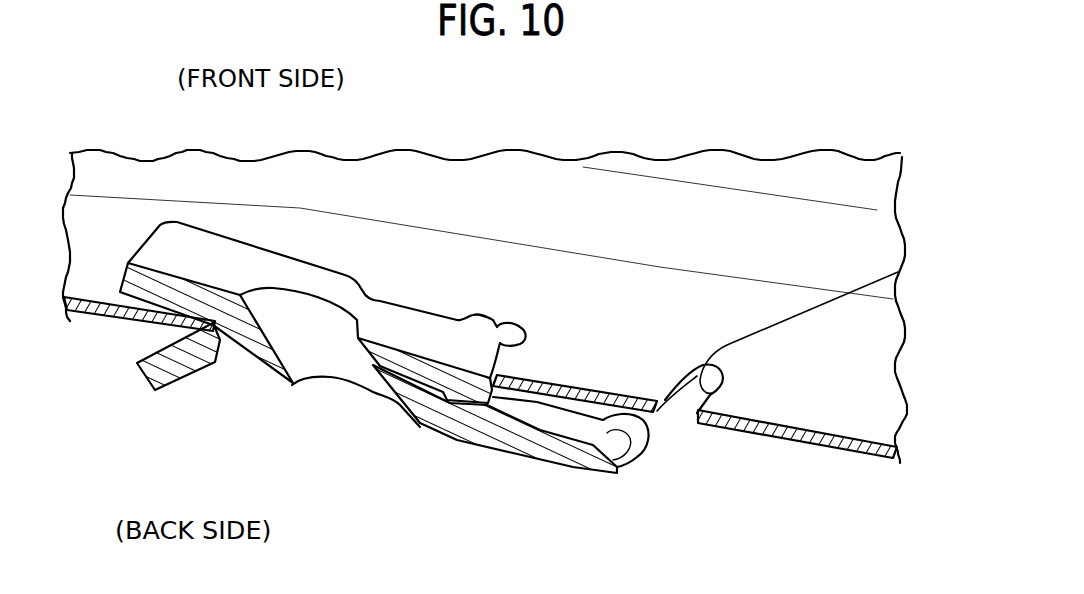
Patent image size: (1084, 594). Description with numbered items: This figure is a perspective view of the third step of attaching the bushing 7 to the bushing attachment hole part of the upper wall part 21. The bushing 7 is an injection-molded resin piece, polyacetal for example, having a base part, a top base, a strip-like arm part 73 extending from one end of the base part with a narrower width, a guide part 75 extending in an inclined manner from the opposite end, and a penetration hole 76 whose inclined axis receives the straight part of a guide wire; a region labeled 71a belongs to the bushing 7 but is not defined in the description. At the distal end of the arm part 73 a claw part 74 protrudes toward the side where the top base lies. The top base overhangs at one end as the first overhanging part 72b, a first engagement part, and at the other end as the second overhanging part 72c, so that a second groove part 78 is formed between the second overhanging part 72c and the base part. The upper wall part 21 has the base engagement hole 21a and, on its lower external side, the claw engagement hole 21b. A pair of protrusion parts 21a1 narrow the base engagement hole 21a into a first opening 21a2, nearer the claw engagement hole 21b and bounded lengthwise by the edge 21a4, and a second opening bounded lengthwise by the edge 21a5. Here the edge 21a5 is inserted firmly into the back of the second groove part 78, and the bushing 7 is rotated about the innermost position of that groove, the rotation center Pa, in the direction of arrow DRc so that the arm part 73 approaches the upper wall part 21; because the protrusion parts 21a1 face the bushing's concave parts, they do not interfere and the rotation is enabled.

The bushing 7 is at (463, 323).
The upper wall part 21 is at (853, 403).
The base engagement hole 21a is at (525, 343).
The protrusion parts 21a1 is at (495, 317).
The first opening 21a2 is at (525, 343).
The edge 21a4 is at (500, 342).
The edge 21a5 is at (217, 337).
The claw engagement hole 21b is at (898, 272).
The terminal base portion 71a is at (415, 317).
The first overhanging part 72b is at (530, 338).
The second overhanging part 72c is at (157, 250).
The arm part 73 is at (524, 458).
The claw part 74 is at (650, 437).
The guide part 75 is at (151, 391).
The penetration hole 76 is at (325, 322).
The second groove part 78 is at (147, 340).
The rotation center Pa is at (220, 360).
The arrow DRc is at (588, 487).